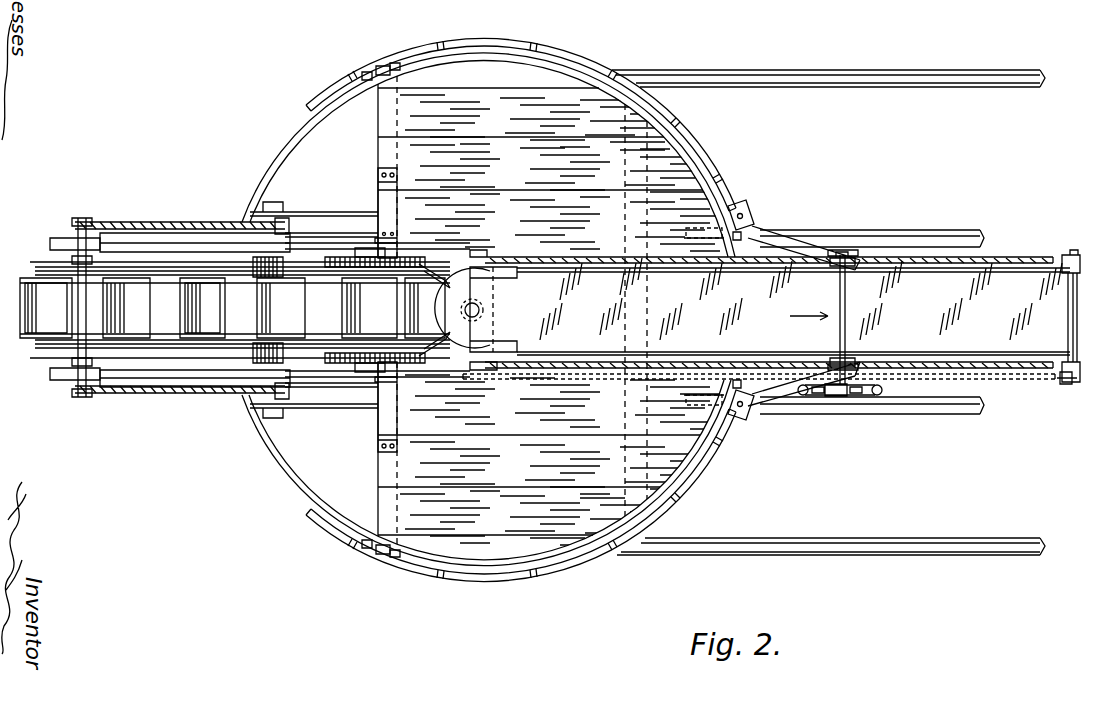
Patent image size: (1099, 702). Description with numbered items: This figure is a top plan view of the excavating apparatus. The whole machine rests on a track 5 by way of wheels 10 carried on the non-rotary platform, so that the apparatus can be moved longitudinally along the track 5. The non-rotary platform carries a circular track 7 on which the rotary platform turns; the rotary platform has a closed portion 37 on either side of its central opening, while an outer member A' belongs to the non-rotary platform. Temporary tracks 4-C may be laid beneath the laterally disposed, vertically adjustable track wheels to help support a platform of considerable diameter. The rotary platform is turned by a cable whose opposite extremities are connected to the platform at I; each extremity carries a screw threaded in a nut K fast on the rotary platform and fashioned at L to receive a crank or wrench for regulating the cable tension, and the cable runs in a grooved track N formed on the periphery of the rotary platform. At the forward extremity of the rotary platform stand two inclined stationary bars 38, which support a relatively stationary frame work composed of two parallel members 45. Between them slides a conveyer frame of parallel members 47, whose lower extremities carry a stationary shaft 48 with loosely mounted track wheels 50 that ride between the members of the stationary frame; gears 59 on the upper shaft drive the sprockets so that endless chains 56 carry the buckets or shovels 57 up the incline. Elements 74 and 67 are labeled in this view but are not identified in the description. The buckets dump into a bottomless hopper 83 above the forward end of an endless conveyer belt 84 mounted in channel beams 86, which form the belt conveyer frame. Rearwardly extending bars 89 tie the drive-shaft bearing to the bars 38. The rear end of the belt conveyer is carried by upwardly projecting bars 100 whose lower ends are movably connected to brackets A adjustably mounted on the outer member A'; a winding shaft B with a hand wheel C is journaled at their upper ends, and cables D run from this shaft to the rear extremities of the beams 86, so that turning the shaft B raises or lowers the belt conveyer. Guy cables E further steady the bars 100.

The circular track 7 is at (290, 480).
The grooved track N is at (695, 478).
The screw extremity L is at (366, 72).
The nut K is at (385, 66).
The cable connection I is at (394, 63).
The temporary tracks 4-C is at (786, 70).
The closed portion of rotary platform 37 is at (549, 311).
The inclined stationary bars 38 is at (397, 200).
The guy ropes or cables E is at (570, 255).
The endless conveyer belt 84 is at (961, 300).
The bottomless hopper 83 is at (506, 345).
The rearwardly extending bars 89 is at (450, 262).
The winding shaft B is at (848, 265).
The track 5 is at (860, 236).
The upwardly projecting bars 100 is at (790, 240).
The brackets A is at (755, 310).
The hand wheel C is at (872, 398).
The cables D is at (1000, 262).
The channel beams 86 is at (985, 262).
The wheels 10 is at (300, 420).
The stationary shaft 48 is at (70, 346).
The threaded rods 74 is at (155, 222).
The parallel members of stationary frame work 45 is at (190, 243).
The track wheels 50 is at (50, 244).
The endless chains 56 is at (128, 262).
The buckets or shovels 57 is at (226, 307).
The conveyer frame members 47 is at (158, 335).
The gears 59 is at (350, 257).
The couplings 67 is at (280, 262).
The outer member of non-rotary platform A' is at (558, 589).